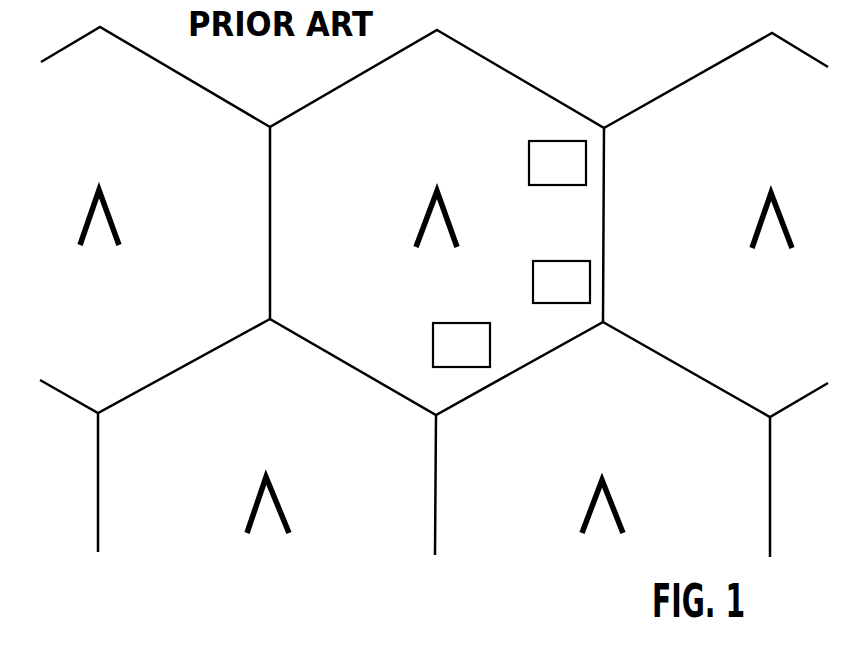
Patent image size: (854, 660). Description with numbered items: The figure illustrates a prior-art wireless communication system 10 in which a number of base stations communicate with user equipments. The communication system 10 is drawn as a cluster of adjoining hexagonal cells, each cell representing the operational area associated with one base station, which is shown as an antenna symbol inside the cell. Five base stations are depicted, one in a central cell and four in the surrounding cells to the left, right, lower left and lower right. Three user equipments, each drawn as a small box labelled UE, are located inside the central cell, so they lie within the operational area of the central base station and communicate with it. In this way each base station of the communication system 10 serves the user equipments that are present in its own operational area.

The wireless communication system 10 is at (614, 68).